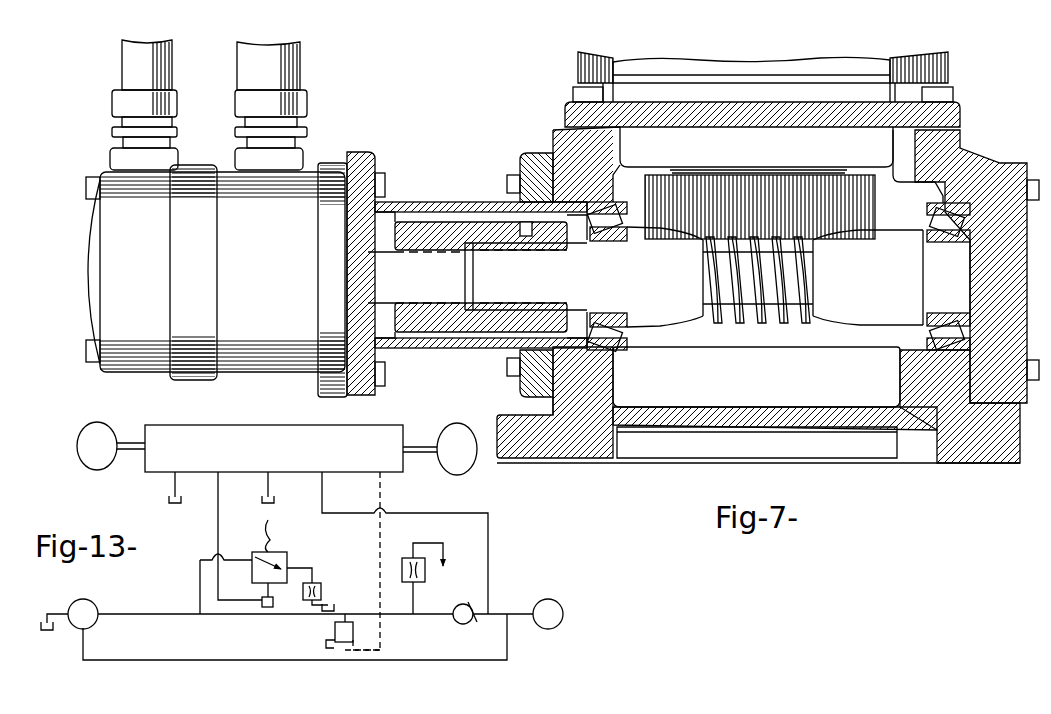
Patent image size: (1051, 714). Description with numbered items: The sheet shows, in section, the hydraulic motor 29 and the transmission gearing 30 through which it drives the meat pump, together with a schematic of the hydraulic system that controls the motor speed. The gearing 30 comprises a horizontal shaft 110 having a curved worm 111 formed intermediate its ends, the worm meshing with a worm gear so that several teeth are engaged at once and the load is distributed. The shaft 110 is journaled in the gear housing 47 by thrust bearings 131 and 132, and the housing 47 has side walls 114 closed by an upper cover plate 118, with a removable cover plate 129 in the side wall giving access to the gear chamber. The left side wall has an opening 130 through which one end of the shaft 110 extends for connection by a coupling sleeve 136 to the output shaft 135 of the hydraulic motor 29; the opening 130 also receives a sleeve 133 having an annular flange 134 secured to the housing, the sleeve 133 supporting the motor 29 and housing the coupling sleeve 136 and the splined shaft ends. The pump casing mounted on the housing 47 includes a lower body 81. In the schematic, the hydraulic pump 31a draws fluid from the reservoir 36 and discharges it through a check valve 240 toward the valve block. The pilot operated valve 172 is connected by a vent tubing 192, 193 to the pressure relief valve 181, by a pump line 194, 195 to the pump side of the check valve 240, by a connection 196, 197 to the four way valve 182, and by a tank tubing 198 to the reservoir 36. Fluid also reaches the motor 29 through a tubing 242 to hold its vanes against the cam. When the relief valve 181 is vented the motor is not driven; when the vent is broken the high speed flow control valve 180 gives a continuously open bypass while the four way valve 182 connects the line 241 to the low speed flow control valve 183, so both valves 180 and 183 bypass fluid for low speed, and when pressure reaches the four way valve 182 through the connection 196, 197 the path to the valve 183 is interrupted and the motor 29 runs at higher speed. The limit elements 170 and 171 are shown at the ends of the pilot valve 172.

In FIG. 7, the hydraulic motor 29 is at (192, 162).
In FIG. 13, the hydraulic motor 29 is at (100, 620).
In FIG. 7, the transmission gearing 30 is at (806, 60).
In FIG. 7, the lower body 81 is at (950, 73).
In FIG. 7, the upper cover plate 118 is at (962, 121).
In FIG. 7, the thrust bearing 131 is at (955, 218).
In FIG. 7, the thrust bearing 132 is at (625, 200).
In FIG. 7, the horizontal shaft 110 is at (880, 240).
In FIG. 7, the removable cover plate 129 is at (998, 255).
In FIG. 7, the curved worm 111 is at (760, 313).
In FIG. 7, the side walls 114 is at (615, 382).
In FIG. 7, the gear housing 47 is at (540, 460).
In FIG. 7, the sleeve 133 is at (432, 201).
In FIG. 7, the annular flange 134 is at (540, 155).
In FIG. 7, the coupling sleeve 136 is at (412, 220).
In FIG. 7, the output shaft 135 is at (390, 282).
In FIG. 7, the opening 130 is at (567, 216).
In FIG. 13, the pilot operated valve 172 is at (262, 437).
In FIG. 13, the limit switch 170 is at (95, 468).
In FIG. 13, the limit switch 171 is at (460, 473).
In FIG. 13, the reservoir 36 is at (182, 510).
In FIG. 13, the tank tubing 198 is at (268, 492).
In FIG. 13, the tubing 196 is at (193, 536).
In FIG. 13, the tubing 197 is at (216, 540).
In FIG. 13, the line 241 is at (200, 600).
In FIG. 13, the tubing 242 is at (190, 660).
In FIG. 13, the four way valve 182 is at (284, 553).
In FIG. 13, the low speed flow control valve 183 is at (323, 586).
In FIG. 13, the pressure relief valve 181 is at (333, 632).
In FIG. 13, the tubing 192 is at (380, 538).
In FIG. 13, the tubing 193 is at (401, 582).
In FIG. 13, the tubing 194 is at (489, 552).
In FIG. 13, the tubing 195 is at (500, 572).
In FIG. 13, the high speed flow control valve 180 is at (428, 578).
In FIG. 13, the check valve 240 is at (460, 625).
In FIG. 13, the hydraulic pump 31a is at (562, 610).